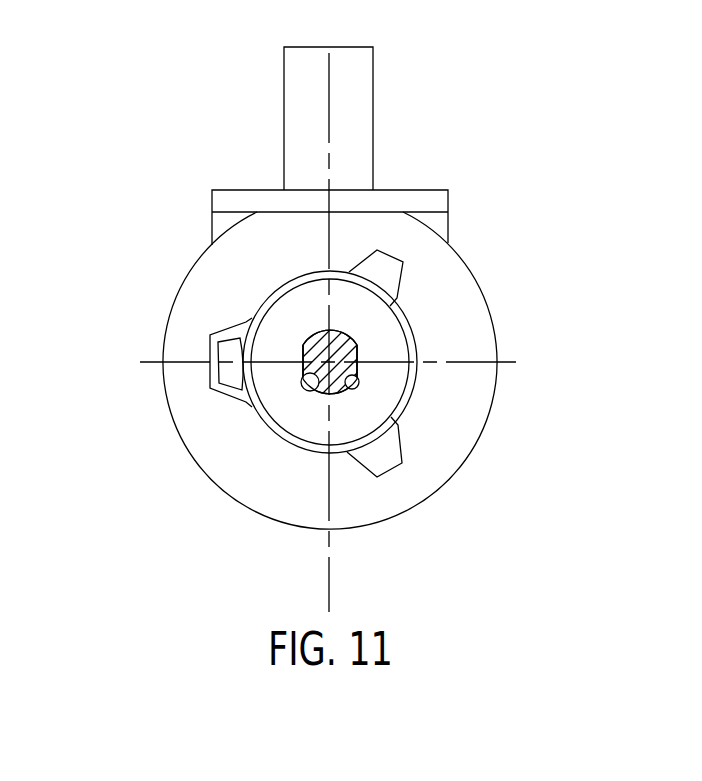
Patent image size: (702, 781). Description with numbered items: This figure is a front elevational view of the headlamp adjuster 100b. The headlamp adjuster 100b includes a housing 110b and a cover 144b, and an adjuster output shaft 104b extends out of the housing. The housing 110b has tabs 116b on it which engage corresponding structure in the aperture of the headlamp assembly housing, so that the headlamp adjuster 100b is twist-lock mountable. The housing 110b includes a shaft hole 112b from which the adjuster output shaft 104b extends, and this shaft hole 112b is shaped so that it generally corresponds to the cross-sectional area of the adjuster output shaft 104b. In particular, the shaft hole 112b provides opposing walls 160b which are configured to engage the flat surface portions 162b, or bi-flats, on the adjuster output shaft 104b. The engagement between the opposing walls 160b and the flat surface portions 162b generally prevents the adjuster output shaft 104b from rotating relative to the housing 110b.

The headlamp adjuster 100b is at (426, 164).
The cover 144b is at (228, 197).
The housing 110b is at (480, 249).
The tabs 116b is at (210, 348).
The adjuster output shaft 104b is at (356, 350).
The flat surface portions 162b is at (302, 342).
The opposing walls 160b is at (312, 393).
The shaft hole 112b is at (334, 404).